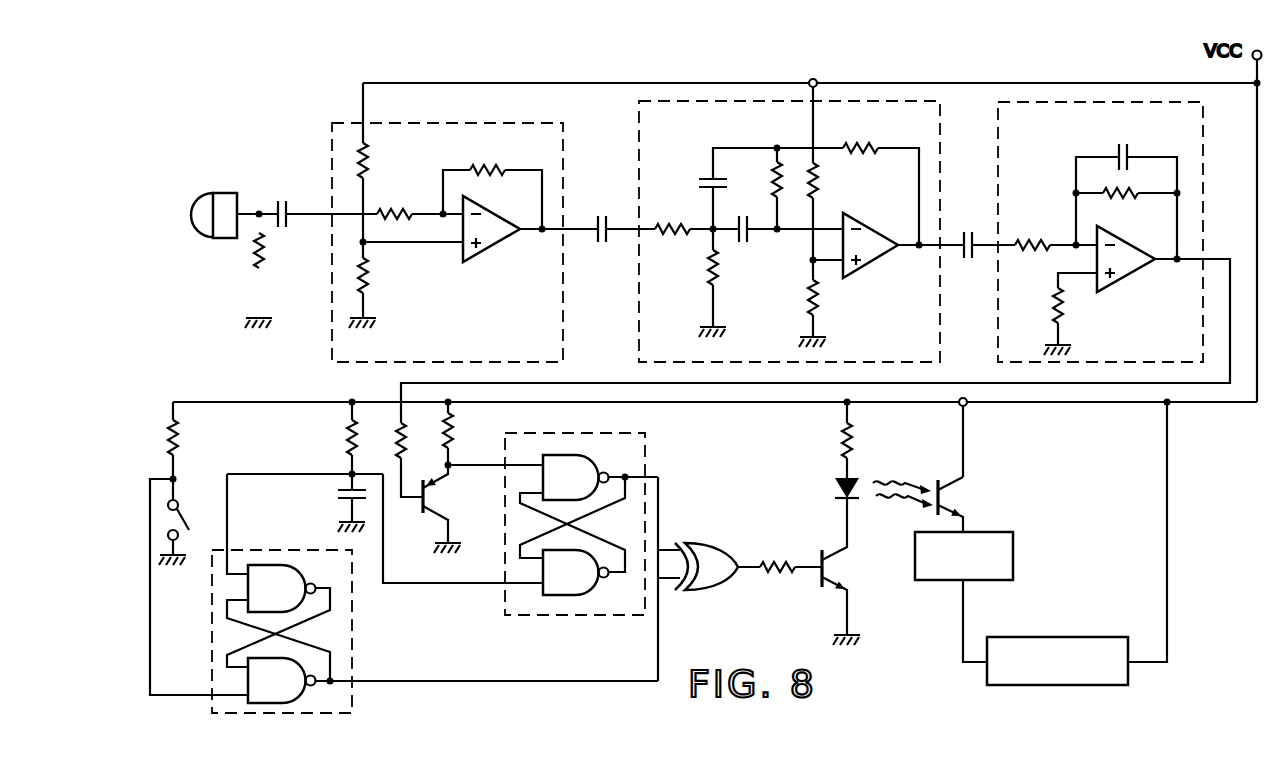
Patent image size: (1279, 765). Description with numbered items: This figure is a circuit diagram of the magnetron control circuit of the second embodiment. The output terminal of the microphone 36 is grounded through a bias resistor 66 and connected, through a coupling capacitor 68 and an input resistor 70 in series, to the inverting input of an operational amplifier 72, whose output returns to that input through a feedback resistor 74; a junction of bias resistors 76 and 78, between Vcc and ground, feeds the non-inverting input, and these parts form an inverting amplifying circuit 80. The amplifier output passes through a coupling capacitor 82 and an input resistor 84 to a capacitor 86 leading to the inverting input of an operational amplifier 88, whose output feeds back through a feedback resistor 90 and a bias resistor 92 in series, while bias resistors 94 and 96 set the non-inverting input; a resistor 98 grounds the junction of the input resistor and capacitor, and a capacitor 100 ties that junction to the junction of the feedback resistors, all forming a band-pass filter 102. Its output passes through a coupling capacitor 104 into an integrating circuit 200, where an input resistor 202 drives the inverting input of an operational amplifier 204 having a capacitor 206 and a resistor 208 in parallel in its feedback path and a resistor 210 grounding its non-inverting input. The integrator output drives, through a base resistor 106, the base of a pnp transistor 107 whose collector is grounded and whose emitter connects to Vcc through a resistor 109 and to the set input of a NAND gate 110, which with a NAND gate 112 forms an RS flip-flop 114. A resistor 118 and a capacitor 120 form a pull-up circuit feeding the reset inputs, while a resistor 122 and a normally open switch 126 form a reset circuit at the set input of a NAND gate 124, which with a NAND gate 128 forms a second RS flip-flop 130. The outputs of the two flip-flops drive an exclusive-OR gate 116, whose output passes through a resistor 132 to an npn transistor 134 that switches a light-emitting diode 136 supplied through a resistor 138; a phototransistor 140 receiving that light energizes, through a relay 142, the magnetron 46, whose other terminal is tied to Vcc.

The microphone 36 is at (229, 194).
The bias resistor 66 is at (267, 264).
The coupling capacitor 68 is at (289, 202).
The input resistor 70 is at (399, 213).
The operational amplifier 72 is at (497, 217).
The feedback resistor 74 is at (488, 167).
The bias resistor 76 is at (369, 164).
The bias resistor 78 is at (370, 279).
The inverting amplifying circuit 80 is at (565, 138).
The coupling capacitor 82 is at (602, 247).
The input resistor 84 is at (676, 240).
The capacitor 86 is at (745, 245).
The operational amplifier 88 is at (882, 237).
The feedback resistor 90 is at (863, 148).
The bias resistor 92 is at (771, 169).
The bias resistor 94 is at (819, 180).
The bias resistor 96 is at (817, 304).
The resistor 98 is at (719, 270).
The capacitor 100 is at (699, 180).
The band-pass filter 102 is at (938, 154).
The coupling capacitor 104 is at (968, 262).
The base resistor 106 is at (403, 429).
The pnp transistor 107 is at (439, 495).
The resistor 109 is at (451, 427).
The NAND gate 110 is at (586, 455).
The NAND gate 112 is at (584, 597).
The RS flip-flop 114 is at (642, 456).
The exclusive-OR gate 116 is at (699, 541).
The resistor 118 is at (347, 432).
The capacitor 120 is at (340, 499).
The resistor 122 is at (178, 433).
The NAND gate 124 is at (294, 702).
The switch 126 is at (186, 510).
The NAND gate 128 is at (294, 566).
The RS flip-flop 130 is at (358, 656).
The resistor 132 is at (774, 560).
The npn transistor 134 is at (844, 572).
The light-emitting diode 136 is at (835, 489).
The resistor 138 is at (842, 432).
The phototransistor 140 is at (964, 489).
The relay 142 is at (1016, 555).
The magnetron 46 is at (1060, 636).
The integrating circuit 200 is at (1202, 156).
The input resistor 202 is at (1032, 256).
The operational amplifier 204 is at (1140, 272).
The capacitor 206 is at (1124, 143).
The resistor 208 is at (1131, 200).
The resistor 210 is at (1063, 312).